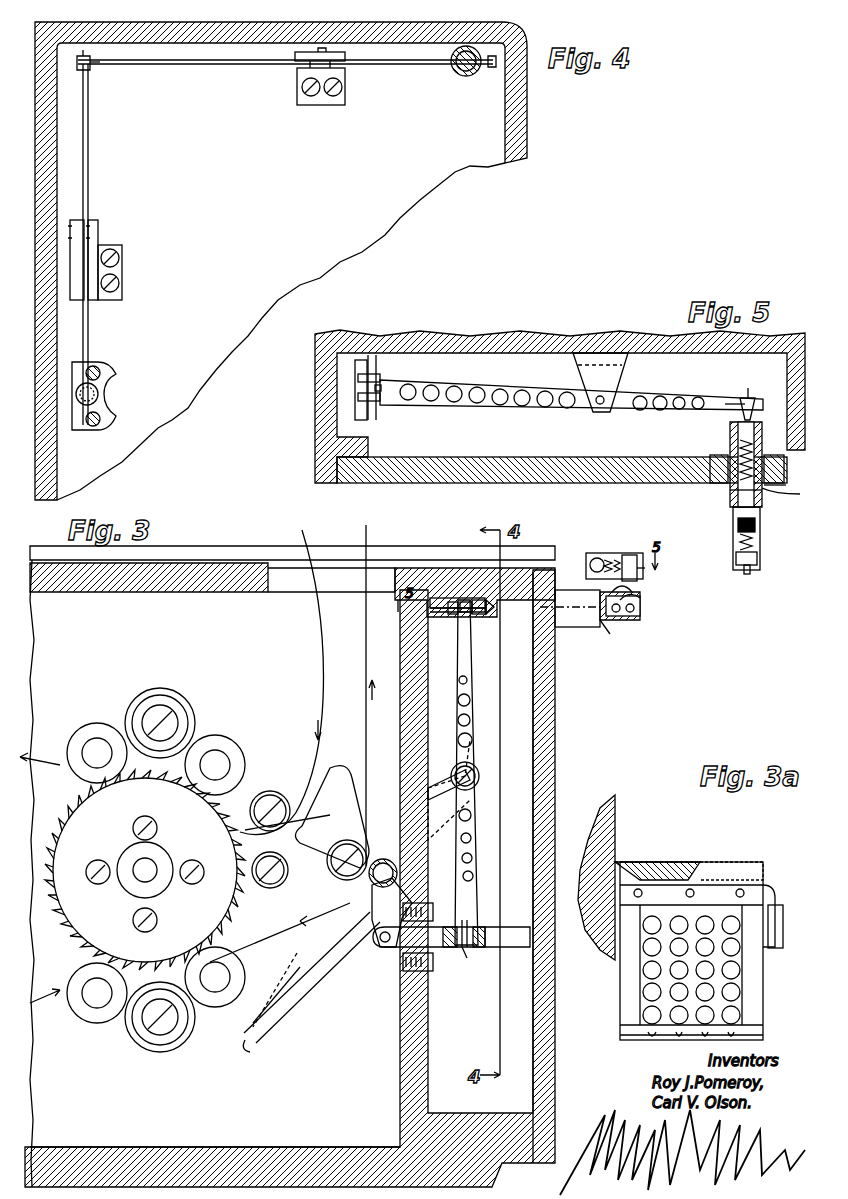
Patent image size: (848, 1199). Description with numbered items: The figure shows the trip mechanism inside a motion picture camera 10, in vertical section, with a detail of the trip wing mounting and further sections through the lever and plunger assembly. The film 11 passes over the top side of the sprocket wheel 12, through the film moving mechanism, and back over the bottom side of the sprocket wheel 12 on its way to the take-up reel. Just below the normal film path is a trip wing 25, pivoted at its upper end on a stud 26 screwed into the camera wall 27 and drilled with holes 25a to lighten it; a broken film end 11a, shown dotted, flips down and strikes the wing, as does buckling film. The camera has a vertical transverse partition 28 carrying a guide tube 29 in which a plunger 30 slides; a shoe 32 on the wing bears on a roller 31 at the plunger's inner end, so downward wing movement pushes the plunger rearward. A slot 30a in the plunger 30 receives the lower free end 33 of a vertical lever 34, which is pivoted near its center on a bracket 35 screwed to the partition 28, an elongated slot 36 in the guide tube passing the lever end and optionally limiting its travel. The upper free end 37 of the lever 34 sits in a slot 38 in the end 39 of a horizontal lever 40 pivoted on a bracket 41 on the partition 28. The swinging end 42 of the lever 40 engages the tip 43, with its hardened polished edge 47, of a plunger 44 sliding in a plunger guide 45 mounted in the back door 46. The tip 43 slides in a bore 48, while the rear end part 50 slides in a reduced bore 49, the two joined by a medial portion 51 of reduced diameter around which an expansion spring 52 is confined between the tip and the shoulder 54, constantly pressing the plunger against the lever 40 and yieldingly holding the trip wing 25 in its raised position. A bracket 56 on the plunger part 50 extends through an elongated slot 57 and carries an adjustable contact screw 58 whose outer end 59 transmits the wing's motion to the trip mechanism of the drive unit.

In FIG. 3, the motion picture camera 10 is at (222, 546).
In FIG. 3, the film 11 is at (365, 608).
In FIG. 3, the broken film end 11a is at (290, 966).
In FIG. 3, the sprocket wheel 12 is at (202, 830).
In FIG. 3, the trip wing 25 is at (262, 1040).
In FIG. 3A, the trip wing 25 is at (752, 990).
In FIG. 3A, the holes 25a is at (650, 990).
In FIG. 3, the stud 26 is at (398, 842).
In FIG. 3A, the stud 26 is at (665, 875).
In FIG. 3, the camera wall 27 is at (215, 1107).
In FIG. 3A, the camera wall 27 is at (615, 840).
In FIG. 4, the vertical transverse partition 28 is at (281, 261).
In FIG. 5, the vertical transverse partition 28 is at (485, 352).
In FIG. 3, the vertical transverse partition 28 is at (418, 1032).
In FIG. 4, the guide tube 29 is at (100, 428).
In FIG. 3, the guide tube 29 is at (433, 960).
In FIG. 4, the plunger 30 is at (104, 400).
In FIG. 3, the plunger 30 is at (450, 895).
In FIG. 3, the slot 30a is at (480, 950).
In FIG. 3, the roller 31 is at (385, 945).
In FIG. 3, the shoe 32 is at (372, 930).
In FIG. 3A, the shoe 32 is at (783, 935).
In FIG. 4, the lower free end 33 is at (104, 388).
In FIG. 3, the lower free end 33 is at (470, 918).
In FIG. 4, the vertical lever 34 is at (98, 320).
In FIG. 3, the vertical lever 34 is at (470, 815).
In FIG. 4, the bracket 35 is at (100, 246).
In FIG. 5, the bracket 35 is at (355, 365).
In FIG. 3, the bracket 35 is at (446, 780).
In FIG. 3, the elongated slot 36 is at (478, 980).
In FIG. 4, the upper free end 37 is at (80, 70).
In FIG. 5, the upper free end 37 is at (362, 400).
In FIG. 3, the upper free end 37 is at (462, 612).
In FIG. 5, the slot 38 is at (378, 405).
In FIG. 4, the end 39 is at (96, 66).
In FIG. 5, the end 39 is at (380, 378).
In FIG. 4, the horizontal lever 40 is at (220, 88).
In FIG. 5, the horizontal lever 40 is at (510, 418).
In FIG. 4, the bracket 41 is at (298, 70).
In FIG. 5, the bracket 41 is at (612, 378).
In FIG. 3, the bracket 41 is at (440, 600).
In FIG. 4, the swinging end 42 is at (490, 68).
In FIG. 5, the swinging end 42 is at (752, 390).
In FIG. 3, the swinging end 42 is at (452, 614).
In FIG. 5, the plunger tip 43 is at (738, 410).
In FIG. 3, the plunger tip 43 is at (480, 614).
In FIG. 4, the plunger 44 is at (460, 72).
In FIG. 5, the plunger 44 is at (758, 505).
In FIG. 3, the plunger 44 is at (640, 612).
In FIG. 4, the plunger guide 45 is at (452, 68).
In FIG. 5, the plunger guide 45 is at (730, 496).
In FIG. 3, the plunger guide 45 is at (583, 626).
In FIG. 5, the back door 46 is at (440, 480).
In FIG. 3, the back door 46 is at (555, 707).
In FIG. 5, the hardened polished edge 47 is at (745, 400).
In FIG. 3, the hardened polished edge 47 is at (470, 610).
In FIG. 5, the bore 48 is at (736, 447).
In FIG. 5, the reduced bore 49 is at (791, 496).
In FIG. 3, the reduced bore 49 is at (612, 600).
In FIG. 3, the rear end part 50 is at (612, 618).
In FIG. 5, the medial portion 51 is at (720, 484).
In FIG. 5, the expansion spring 52 is at (784, 462).
In FIG. 5, the shoulder 54 is at (786, 480).
In FIG. 5, the bracket 56 is at (757, 560).
In FIG. 3, the bracket 56 is at (630, 590).
In FIG. 3, the elongated slot 57 is at (637, 578).
In FIG. 5, the adjustable contact screw 58 is at (760, 540).
In FIG. 3, the adjustable contact screw 58 is at (626, 540).
In FIG. 5, the outer end 59 is at (747, 574).
In FIG. 3, the outer end 59 is at (645, 568).